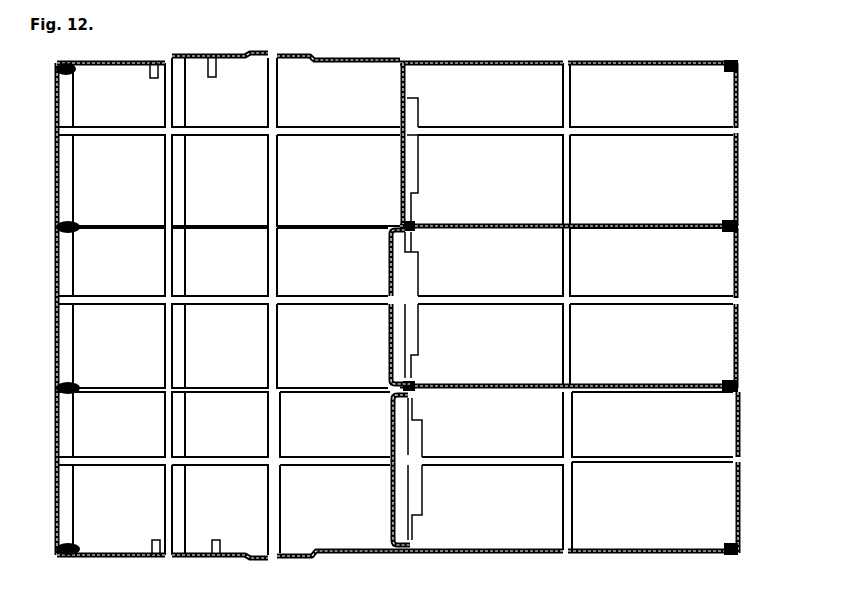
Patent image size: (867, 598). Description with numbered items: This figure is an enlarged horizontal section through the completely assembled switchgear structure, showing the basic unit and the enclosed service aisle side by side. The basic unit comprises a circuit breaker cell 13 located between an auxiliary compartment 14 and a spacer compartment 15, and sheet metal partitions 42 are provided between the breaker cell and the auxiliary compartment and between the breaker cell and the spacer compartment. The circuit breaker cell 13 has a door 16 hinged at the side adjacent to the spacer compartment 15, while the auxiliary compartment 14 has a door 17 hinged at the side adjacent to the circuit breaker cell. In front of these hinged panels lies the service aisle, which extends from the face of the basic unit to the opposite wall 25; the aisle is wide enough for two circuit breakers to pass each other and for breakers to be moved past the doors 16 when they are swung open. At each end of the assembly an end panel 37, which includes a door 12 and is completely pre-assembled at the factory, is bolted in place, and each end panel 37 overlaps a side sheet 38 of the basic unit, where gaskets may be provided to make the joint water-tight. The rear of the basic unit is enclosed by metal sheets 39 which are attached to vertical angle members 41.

The door 12 is at (153, 62).
The circuit breaker cell 13 is at (718, 278).
The auxiliary compartment 14 is at (720, 496).
The spacer compartment 15 is at (718, 150).
The door 16 is at (389, 272).
The door 17 is at (391, 497).
The opposite wall 25 is at (57, 352).
The end panel 37 is at (299, 55).
The side sheet 38 is at (525, 62).
The metal sheet 39 is at (738, 105).
The vertical angle member 41 is at (726, 70).
The sheet metal partition 42 is at (654, 224).